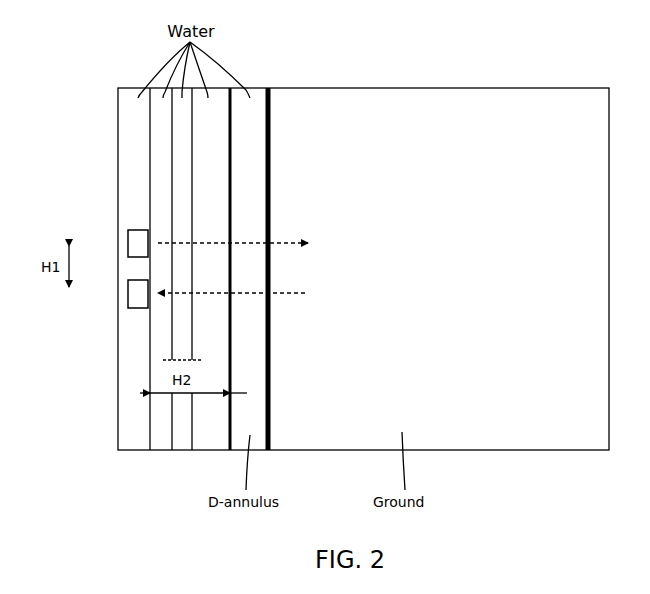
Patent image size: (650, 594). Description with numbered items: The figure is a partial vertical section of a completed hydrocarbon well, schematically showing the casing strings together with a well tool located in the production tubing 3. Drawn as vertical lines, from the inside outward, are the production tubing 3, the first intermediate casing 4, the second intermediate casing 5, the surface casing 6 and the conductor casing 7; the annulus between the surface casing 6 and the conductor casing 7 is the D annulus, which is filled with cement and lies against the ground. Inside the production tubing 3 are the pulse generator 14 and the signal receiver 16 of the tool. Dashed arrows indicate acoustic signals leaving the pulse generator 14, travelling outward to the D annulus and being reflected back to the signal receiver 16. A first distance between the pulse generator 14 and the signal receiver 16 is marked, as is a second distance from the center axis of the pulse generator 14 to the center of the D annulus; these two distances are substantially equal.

The production tubing 3 is at (150, 285).
The first intermediate casing 4 is at (171, 285).
The second intermediate casing 5 is at (191, 285).
The surface casing 6 is at (230, 285).
The conductor casing 7 is at (267, 285).
The pulse generator 14 is at (116, 243).
The signal receiver 16 is at (116, 294).